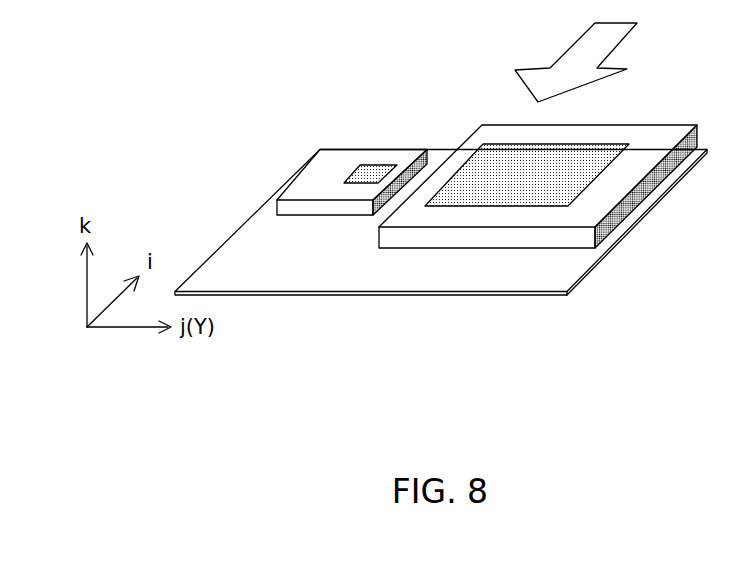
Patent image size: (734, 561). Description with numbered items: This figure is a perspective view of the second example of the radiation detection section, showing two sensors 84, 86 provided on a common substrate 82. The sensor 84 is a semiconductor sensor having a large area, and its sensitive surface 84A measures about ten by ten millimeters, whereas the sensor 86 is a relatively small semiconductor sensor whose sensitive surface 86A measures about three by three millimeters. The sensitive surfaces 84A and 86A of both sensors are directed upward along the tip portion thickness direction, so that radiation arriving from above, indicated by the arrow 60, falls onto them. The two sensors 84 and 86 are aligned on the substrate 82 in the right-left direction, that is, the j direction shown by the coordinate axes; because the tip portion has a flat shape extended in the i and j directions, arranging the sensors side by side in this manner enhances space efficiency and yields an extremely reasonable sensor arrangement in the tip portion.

The light / incident direction arrow 60 is at (614, 48).
The substrate 82 is at (368, 276).
The sensor 84 is at (657, 125).
The sensitive surface 84A is at (517, 207).
The sensor 86 is at (362, 149).
The sensitive surface 86A is at (352, 174).